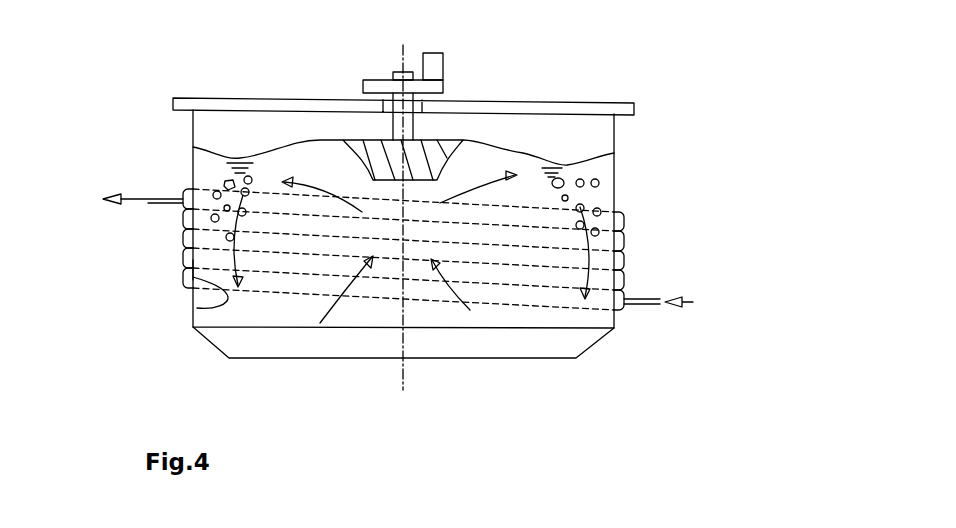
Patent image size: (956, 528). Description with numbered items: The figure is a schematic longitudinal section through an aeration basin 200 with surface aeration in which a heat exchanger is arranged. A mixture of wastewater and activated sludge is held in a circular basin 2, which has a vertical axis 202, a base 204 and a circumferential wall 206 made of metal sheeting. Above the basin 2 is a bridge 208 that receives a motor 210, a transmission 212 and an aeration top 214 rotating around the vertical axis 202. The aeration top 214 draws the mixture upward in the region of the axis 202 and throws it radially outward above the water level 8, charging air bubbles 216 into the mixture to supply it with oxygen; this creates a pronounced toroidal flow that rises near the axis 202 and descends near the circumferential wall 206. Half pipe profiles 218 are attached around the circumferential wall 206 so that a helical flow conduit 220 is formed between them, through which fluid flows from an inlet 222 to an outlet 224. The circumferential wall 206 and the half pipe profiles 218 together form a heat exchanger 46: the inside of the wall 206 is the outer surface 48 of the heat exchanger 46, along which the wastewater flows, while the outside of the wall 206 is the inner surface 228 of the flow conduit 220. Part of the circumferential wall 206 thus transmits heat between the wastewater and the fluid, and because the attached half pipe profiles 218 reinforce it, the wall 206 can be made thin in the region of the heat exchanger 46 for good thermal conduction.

The basin 2 is at (192, 326).
The water level 8 is at (533, 153).
The heat exchanger 46 is at (187, 269).
The outer surface of heat exchanger 48 is at (192, 307).
The aeration basin 200 is at (152, 100).
The vertical axis 202 is at (403, 368).
The base 204 is at (322, 358).
The circumferential wall 206 is at (614, 135).
The bridge 208 is at (612, 108).
The motor 210 is at (445, 58).
The transmission 212 is at (382, 86).
The aeration top 214 is at (360, 140).
The air bubbles 216 is at (222, 180).
The half pipe profiles 218 is at (625, 220).
The helical flow conduit 220 is at (623, 267).
The inlet 222 is at (642, 307).
The outlet 224 is at (158, 193).
The inner surface of flow conduit 228 is at (188, 238).